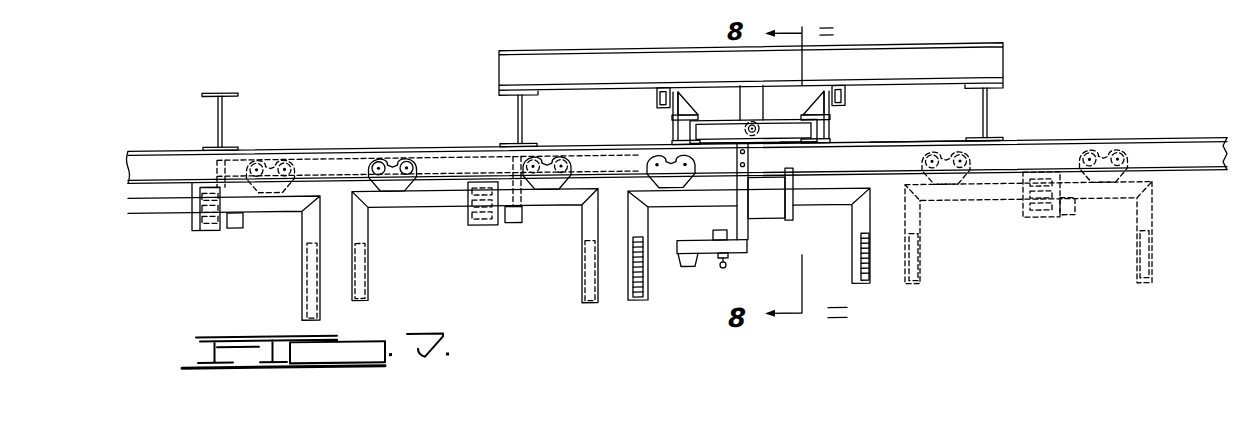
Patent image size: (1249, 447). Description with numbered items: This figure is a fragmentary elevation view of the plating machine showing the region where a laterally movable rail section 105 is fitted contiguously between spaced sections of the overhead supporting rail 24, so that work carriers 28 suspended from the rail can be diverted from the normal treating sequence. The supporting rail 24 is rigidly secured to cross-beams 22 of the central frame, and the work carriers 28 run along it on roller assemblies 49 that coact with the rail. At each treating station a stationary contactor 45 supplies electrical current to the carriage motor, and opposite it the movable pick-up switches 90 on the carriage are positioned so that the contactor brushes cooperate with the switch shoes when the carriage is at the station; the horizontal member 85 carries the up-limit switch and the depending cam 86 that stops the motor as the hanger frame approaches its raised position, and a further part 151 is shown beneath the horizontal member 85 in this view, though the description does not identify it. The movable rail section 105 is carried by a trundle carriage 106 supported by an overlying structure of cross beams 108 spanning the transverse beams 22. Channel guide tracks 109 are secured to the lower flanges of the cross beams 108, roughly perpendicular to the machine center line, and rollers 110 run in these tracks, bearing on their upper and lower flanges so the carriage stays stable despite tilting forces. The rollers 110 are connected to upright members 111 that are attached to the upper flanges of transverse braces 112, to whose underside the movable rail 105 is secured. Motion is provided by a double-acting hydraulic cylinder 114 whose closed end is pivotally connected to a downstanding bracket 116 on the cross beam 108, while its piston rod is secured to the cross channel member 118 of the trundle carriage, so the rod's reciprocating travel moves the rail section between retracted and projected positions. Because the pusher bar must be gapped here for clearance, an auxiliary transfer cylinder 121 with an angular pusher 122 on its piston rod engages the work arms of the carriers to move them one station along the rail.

The cross-beams 22 is at (221, 123).
The supporting rail 24 is at (1046, 164).
The work carriers 28 is at (306, 278).
The stationary contactor 45 is at (774, 220).
The roller assemblies 49 is at (687, 187).
The horizontal member 85 is at (692, 256).
The cam 86 is at (687, 272).
The pick-up switches 90 is at (473, 234).
The laterally movable rail section 105 is at (884, 157).
The trundle carriage 106 is at (725, 117).
The cross beams 108 is at (884, 64).
The channel guide tracks 109 is at (660, 118).
The rollers 110 is at (656, 106).
The upright members 111 is at (690, 109).
The transverse braces 112 is at (688, 134).
The hydraulic cylinder 114 is at (731, 145).
The downstanding bracket 116 is at (758, 108).
The cross channel member 118 is at (796, 140).
The auxiliary transfer cylinder 121 is at (437, 163).
The angular pusher 122 is at (535, 184).
The bolt 151 is at (731, 266).